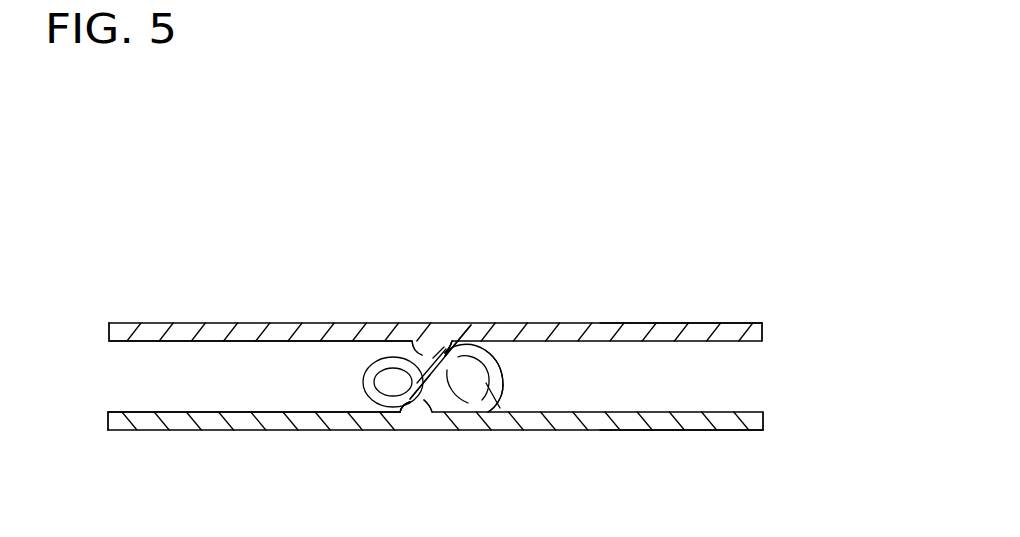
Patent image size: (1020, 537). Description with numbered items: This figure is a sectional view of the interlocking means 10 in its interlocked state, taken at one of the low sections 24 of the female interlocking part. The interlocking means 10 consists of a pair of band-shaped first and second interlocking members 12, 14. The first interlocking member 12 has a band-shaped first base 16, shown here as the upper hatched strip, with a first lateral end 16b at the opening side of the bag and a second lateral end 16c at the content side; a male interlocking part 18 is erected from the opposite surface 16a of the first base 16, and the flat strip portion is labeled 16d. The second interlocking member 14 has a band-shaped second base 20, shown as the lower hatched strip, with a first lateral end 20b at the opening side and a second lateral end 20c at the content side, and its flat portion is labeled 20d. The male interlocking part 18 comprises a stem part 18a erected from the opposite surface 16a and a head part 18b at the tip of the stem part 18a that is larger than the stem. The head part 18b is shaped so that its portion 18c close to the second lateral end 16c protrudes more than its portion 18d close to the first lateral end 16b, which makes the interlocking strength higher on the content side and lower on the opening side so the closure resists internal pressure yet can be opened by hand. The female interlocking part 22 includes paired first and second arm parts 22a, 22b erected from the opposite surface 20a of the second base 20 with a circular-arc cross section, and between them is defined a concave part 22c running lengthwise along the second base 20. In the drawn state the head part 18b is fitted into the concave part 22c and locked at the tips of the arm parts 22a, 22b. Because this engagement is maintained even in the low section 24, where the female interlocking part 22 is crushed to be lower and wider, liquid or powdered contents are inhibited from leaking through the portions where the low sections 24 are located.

The interlocking means 10 is at (546, 206).
The first interlocking member 12 is at (697, 323).
The second interlocking member 14 is at (697, 431).
The first base 16 is at (166, 323).
The opposite surface of first base 16a is at (220, 341).
The first lateral end of first base 16b is at (108, 331).
The second lateral end of first base 16c is at (765, 332).
The flat portion of first plate 16d is at (295, 323).
The male interlocking part 18 is at (405, 411).
The stem part 18a is at (430, 352).
The head part 18b is at (440, 413).
The portion of head part close to second lateral end 18c is at (477, 355).
The portion of head part close to first lateral end 18d is at (372, 390).
The second base 20 is at (155, 430).
The opposite surface of second base 20a is at (216, 412).
The first lateral end of second base 20b is at (108, 421).
The second lateral end of second base 20c is at (766, 420).
The flat portion of second plate 20d is at (287, 430).
The female interlocking part 22 is at (500, 372).
The first arm part 22a is at (378, 366).
The second arm part 22b is at (512, 355).
The concave part 22c is at (472, 410).
The low section 24 is at (508, 385).